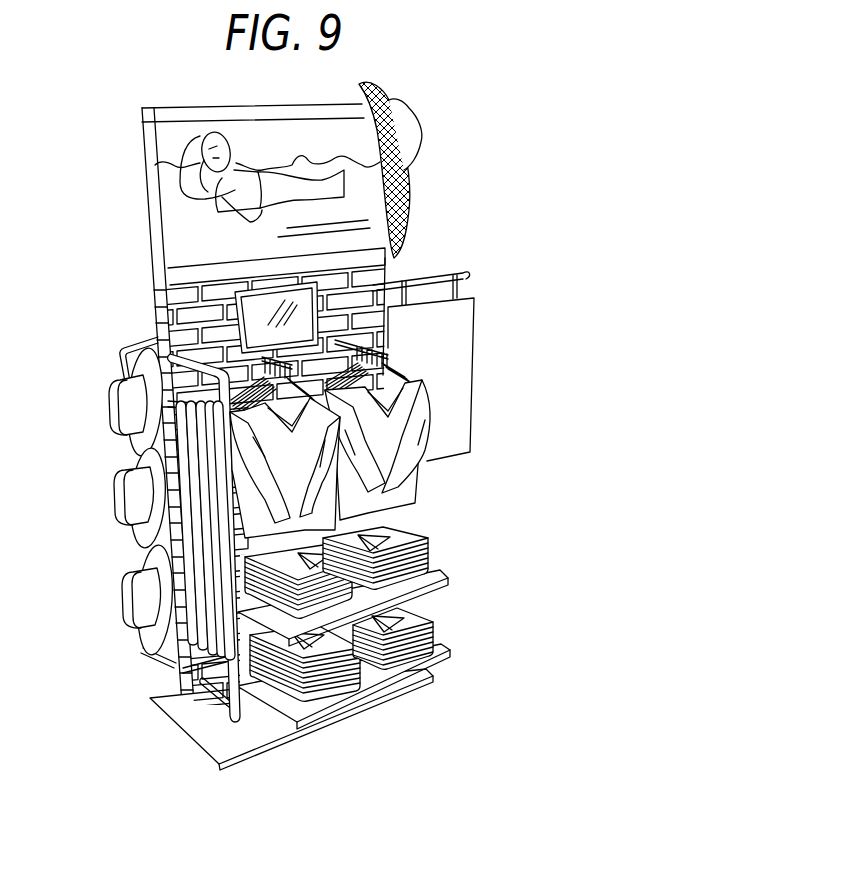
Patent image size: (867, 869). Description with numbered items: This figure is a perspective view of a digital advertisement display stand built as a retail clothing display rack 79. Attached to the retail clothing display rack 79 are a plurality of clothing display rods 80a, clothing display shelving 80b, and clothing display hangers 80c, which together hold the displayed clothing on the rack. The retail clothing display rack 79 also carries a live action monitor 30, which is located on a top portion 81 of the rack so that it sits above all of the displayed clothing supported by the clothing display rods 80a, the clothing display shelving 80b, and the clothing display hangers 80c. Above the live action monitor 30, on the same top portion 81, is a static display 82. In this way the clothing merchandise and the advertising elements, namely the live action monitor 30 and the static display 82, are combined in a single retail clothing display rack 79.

The retail clothing display rack 79 is at (434, 173).
The live action monitor 30 is at (228, 312).
The static display 82 is at (240, 250).
The top portion 81 is at (372, 285).
The clothing display rods 80a is at (406, 372).
The clothing display shelving 80b is at (288, 709).
The clothing display hangers 80c is at (117, 498).